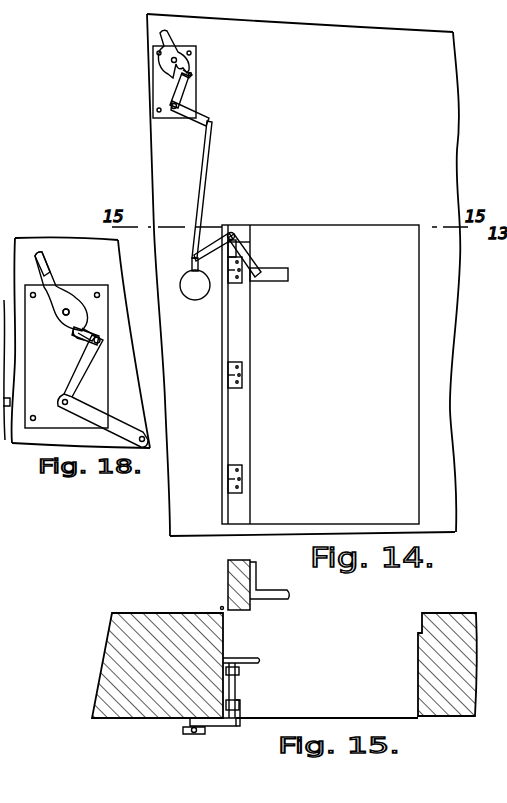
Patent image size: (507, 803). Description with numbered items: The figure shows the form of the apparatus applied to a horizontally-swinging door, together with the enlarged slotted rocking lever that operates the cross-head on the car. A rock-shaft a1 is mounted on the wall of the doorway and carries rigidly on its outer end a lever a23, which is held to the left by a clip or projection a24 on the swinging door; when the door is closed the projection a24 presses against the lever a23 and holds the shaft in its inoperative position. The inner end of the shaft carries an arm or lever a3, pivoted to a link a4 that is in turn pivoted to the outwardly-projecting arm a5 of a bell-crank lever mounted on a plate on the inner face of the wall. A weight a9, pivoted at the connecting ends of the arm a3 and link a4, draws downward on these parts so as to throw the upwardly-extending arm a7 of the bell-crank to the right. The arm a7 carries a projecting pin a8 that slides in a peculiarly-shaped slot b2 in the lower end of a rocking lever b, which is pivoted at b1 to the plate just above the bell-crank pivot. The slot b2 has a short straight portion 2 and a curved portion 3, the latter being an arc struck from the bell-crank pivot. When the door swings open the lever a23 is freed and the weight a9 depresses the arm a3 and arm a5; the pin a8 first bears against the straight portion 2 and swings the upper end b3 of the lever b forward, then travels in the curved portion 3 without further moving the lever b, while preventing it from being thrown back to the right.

In FIG. 14, the rocking lever b is at (175, 46).
In FIG. 18, the rocking lever b is at (58, 297).
In FIG. 18, the pivot b1 is at (63, 316).
In FIG. 18, the slot b2 is at (76, 336).
In FIG. 18, the upper end of the lever b3 is at (48, 268).
In FIG. 18, the straight portion of the slot 2 is at (89, 322).
In FIG. 18, the curved portion of the slot 3 is at (100, 336).
In FIG. 15, the rock-shaft a1 is at (238, 692).
In FIG. 14, the arm or lever a3 is at (213, 232).
In FIG. 15, the arm or lever a3 is at (216, 727).
In FIG. 14, the link a4 is at (207, 194).
In FIG. 14, the outwardly-projecting arm of the bell-crank lever a5 is at (205, 113).
In FIG. 18, the outwardly-projecting arm of the bell-crank lever a5 is at (134, 410).
In FIG. 14, the upwardly-extending arm of the bell-crank lever a7 is at (183, 91).
In FIG. 18, the upwardly-extending arm of the bell-crank lever a7 is at (82, 374).
In FIG. 18, the projecting pin a8 is at (100, 342).
In FIG. 14, the weight a9 is at (195, 300).
In FIG. 14, the lever a23 is at (247, 253).
In FIG. 15, the lever a23 is at (250, 659).
In FIG. 14, the clip or projection a24 is at (279, 272).
In FIG. 15, the clip or projection a24 is at (280, 599).